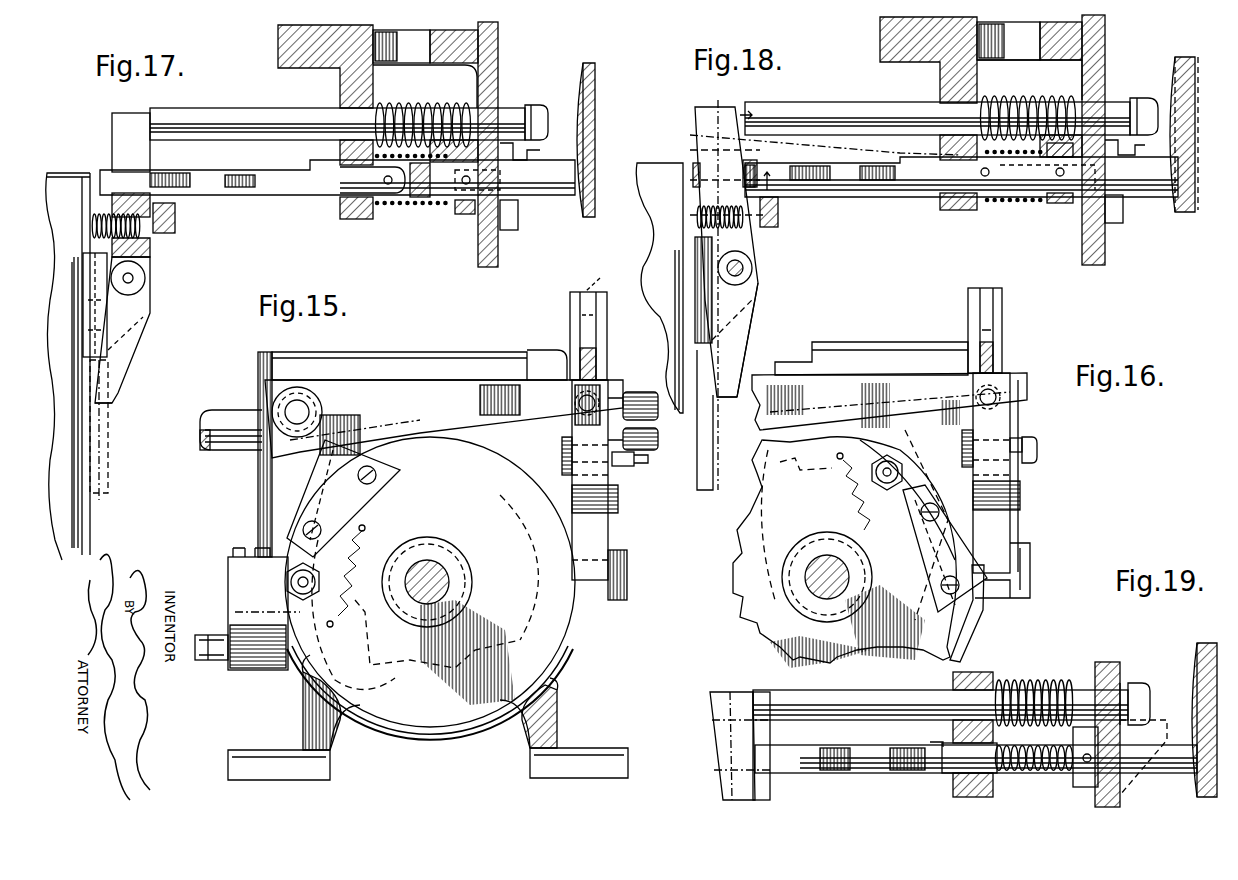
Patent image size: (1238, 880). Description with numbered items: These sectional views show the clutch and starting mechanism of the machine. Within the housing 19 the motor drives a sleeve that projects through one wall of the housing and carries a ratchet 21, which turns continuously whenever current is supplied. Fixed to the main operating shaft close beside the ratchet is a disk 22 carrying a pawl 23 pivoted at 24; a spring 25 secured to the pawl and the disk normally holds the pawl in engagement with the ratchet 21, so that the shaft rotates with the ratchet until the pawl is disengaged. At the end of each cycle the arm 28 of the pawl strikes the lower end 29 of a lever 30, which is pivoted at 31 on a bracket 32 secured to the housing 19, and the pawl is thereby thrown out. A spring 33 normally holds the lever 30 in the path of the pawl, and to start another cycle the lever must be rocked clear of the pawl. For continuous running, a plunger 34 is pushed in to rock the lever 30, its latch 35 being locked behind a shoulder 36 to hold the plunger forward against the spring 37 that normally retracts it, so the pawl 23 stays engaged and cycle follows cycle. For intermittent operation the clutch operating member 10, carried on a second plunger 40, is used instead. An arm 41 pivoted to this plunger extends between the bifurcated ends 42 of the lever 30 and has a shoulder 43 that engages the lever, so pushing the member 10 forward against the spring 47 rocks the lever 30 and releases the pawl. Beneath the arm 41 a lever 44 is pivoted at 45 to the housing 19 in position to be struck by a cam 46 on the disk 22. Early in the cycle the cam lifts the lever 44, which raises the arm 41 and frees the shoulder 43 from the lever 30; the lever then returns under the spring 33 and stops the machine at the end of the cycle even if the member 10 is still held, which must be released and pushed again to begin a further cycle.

In FIG. 17, the clutch operating member 10 is at (591, 124).
In FIG. 18, the clutch operating member 10 is at (1196, 133).
In FIG. 19, the clutch operating member 10 is at (1200, 690).
In FIG. 15, the housing 19 is at (373, 362).
In FIG. 16, the housing 19 is at (846, 345).
In FIG. 15, the ratchet 21 is at (516, 564).
In FIG. 16, the ratchet 21 is at (742, 565).
In FIG. 15, the disk 22 is at (545, 650).
In FIG. 16, the disk 22 is at (958, 642).
In FIG. 15, the pawl 23 is at (365, 675).
In FIG. 16, the pawl 23 is at (787, 472).
In FIG. 15, the pawl pivot 24 is at (296, 583).
In FIG. 16, the pawl pivot 24 is at (897, 471).
In FIG. 15, the spring 25 is at (352, 576).
In FIG. 16, the spring 25 is at (842, 492).
In FIG. 15, the arm of the pawl 28 is at (333, 450).
In FIG. 16, the arm of the pawl 28 is at (1000, 592).
In FIG. 17, the lower end of lever 29 is at (118, 395).
In FIG. 15, the lower end of lever 29 is at (605, 552).
In FIG. 18, the lower end of lever 29 is at (745, 368).
In FIG. 16, the lower end of lever 29 is at (1012, 550).
In FIG. 17, the lever 30 is at (150, 264).
In FIG. 15, the lever 30 is at (583, 437).
In FIG. 18, the lever 30 is at (760, 256).
In FIG. 16, the lever 30 is at (1010, 426).
In FIG. 15, the pivot 31 is at (636, 462).
In FIG. 16, the pivot 31 is at (1037, 449).
In FIG. 17, the bracket 32 is at (150, 314).
In FIG. 15, the bracket 32 is at (618, 488).
In FIG. 18, the bracket 32 is at (758, 300).
In FIG. 16, the bracket 32 is at (1020, 481).
In FIG. 17, the spring 33 is at (150, 236).
In FIG. 15, the spring 33 is at (573, 403).
In FIG. 18, the spring 33 is at (700, 226).
In FIG. 16, the spring 33 is at (979, 398).
In FIG. 17, the plunger 34 is at (289, 109).
In FIG. 15, the plunger 34 is at (598, 273).
In FIG. 18, the plunger 34 is at (838, 102).
In FIG. 19, the plunger 34 is at (889, 690).
In FIG. 17, the latch 35 is at (535, 104).
In FIG. 18, the latch 35 is at (1148, 97).
In FIG. 19, the latch 35 is at (1137, 690).
In FIG. 17, the shoulder 36 is at (530, 149).
In FIG. 18, the shoulder 36 is at (1122, 146).
In FIG. 17, the spring 37 is at (396, 104).
In FIG. 18, the spring 37 is at (1008, 100).
In FIG. 19, the spring 37 is at (1020, 683).
In FIG. 17, the second plunger 40 is at (441, 198).
In FIG. 18, the second plunger 40 is at (1035, 200).
In FIG. 19, the second plunger 40 is at (1060, 787).
In FIG. 17, the arm 41 is at (290, 196).
In FIG. 15, the arm 41 is at (597, 368).
In FIG. 18, the arm 41 is at (863, 198).
In FIG. 16, the arm 41 is at (995, 360).
In FIG. 19, the arm 41 is at (853, 774).
In FIG. 17, the bifurcated ends 42 is at (131, 142).
In FIG. 15, the bifurcated ends 42 is at (601, 343).
In FIG. 18, the bifurcated ends 42 is at (712, 108).
In FIG. 16, the bifurcated ends 42 is at (1003, 315).
In FIG. 19, the bifurcated ends 42 is at (722, 693).
In FIG. 17, the shoulder 43 is at (175, 198).
In FIG. 15, the lever 44 is at (432, 393).
In FIG. 16, the lever 44 is at (889, 401).
In FIG. 15, the pivot 45 is at (304, 405).
In FIG. 15, the cam 46 is at (312, 486).
In FIG. 16, the cam 46 is at (945, 548).
In FIG. 17, the spring 47 is at (400, 206).
In FIG. 18, the spring 47 is at (990, 205).
In FIG. 19, the spring 47 is at (1035, 783).